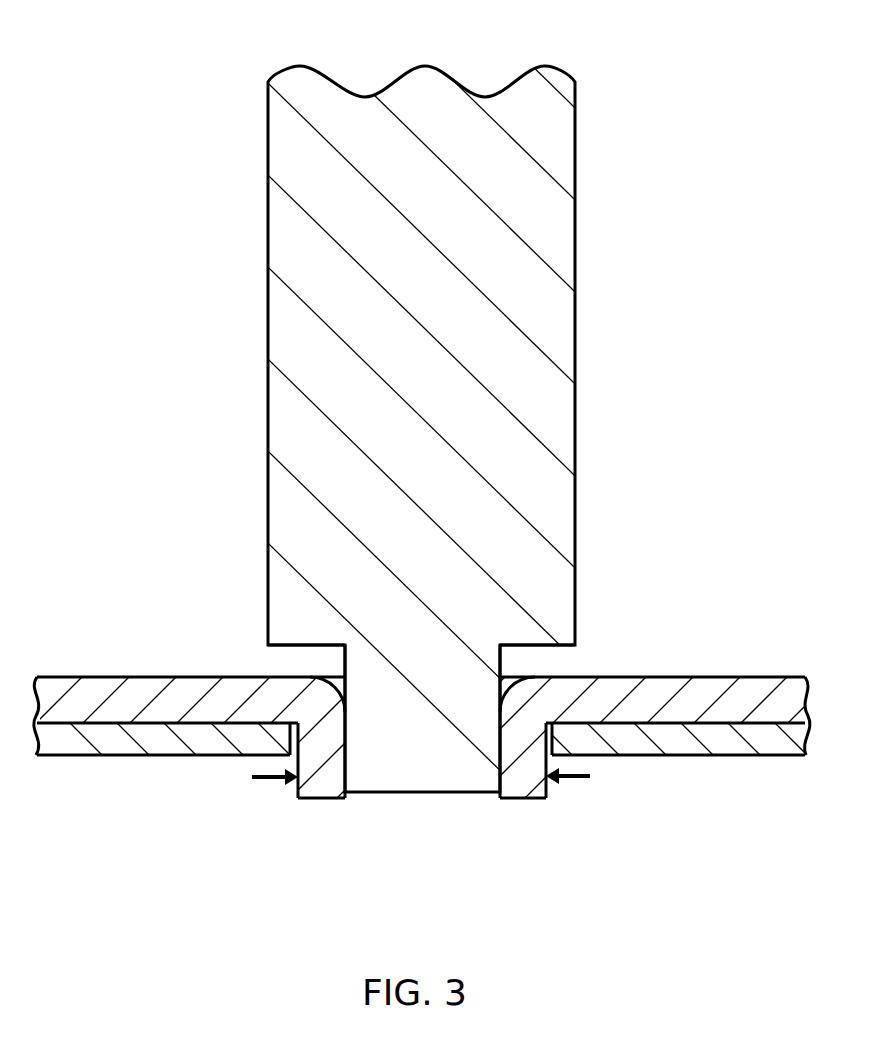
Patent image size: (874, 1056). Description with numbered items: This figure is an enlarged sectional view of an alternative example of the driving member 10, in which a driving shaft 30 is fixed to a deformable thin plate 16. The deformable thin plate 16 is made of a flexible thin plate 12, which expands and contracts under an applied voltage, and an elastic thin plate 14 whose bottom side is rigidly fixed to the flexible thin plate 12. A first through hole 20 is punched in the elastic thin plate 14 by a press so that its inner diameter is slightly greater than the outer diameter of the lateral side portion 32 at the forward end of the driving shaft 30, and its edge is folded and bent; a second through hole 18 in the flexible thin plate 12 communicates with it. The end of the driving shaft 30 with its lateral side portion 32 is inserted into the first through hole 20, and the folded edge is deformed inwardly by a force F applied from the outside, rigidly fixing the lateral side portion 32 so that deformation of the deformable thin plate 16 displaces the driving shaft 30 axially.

The driving member 10 is at (437, 461).
The driving shaft 30 is at (384, 444).
The lateral side portion 32 is at (340, 668).
The first through hole 20 is at (345, 765).
The second through hole 18 is at (552, 741).
The elastic thin plate 14 is at (437, 751).
The flexible thin plate 12 is at (437, 761).
The deformable thin plate 16 is at (437, 761).